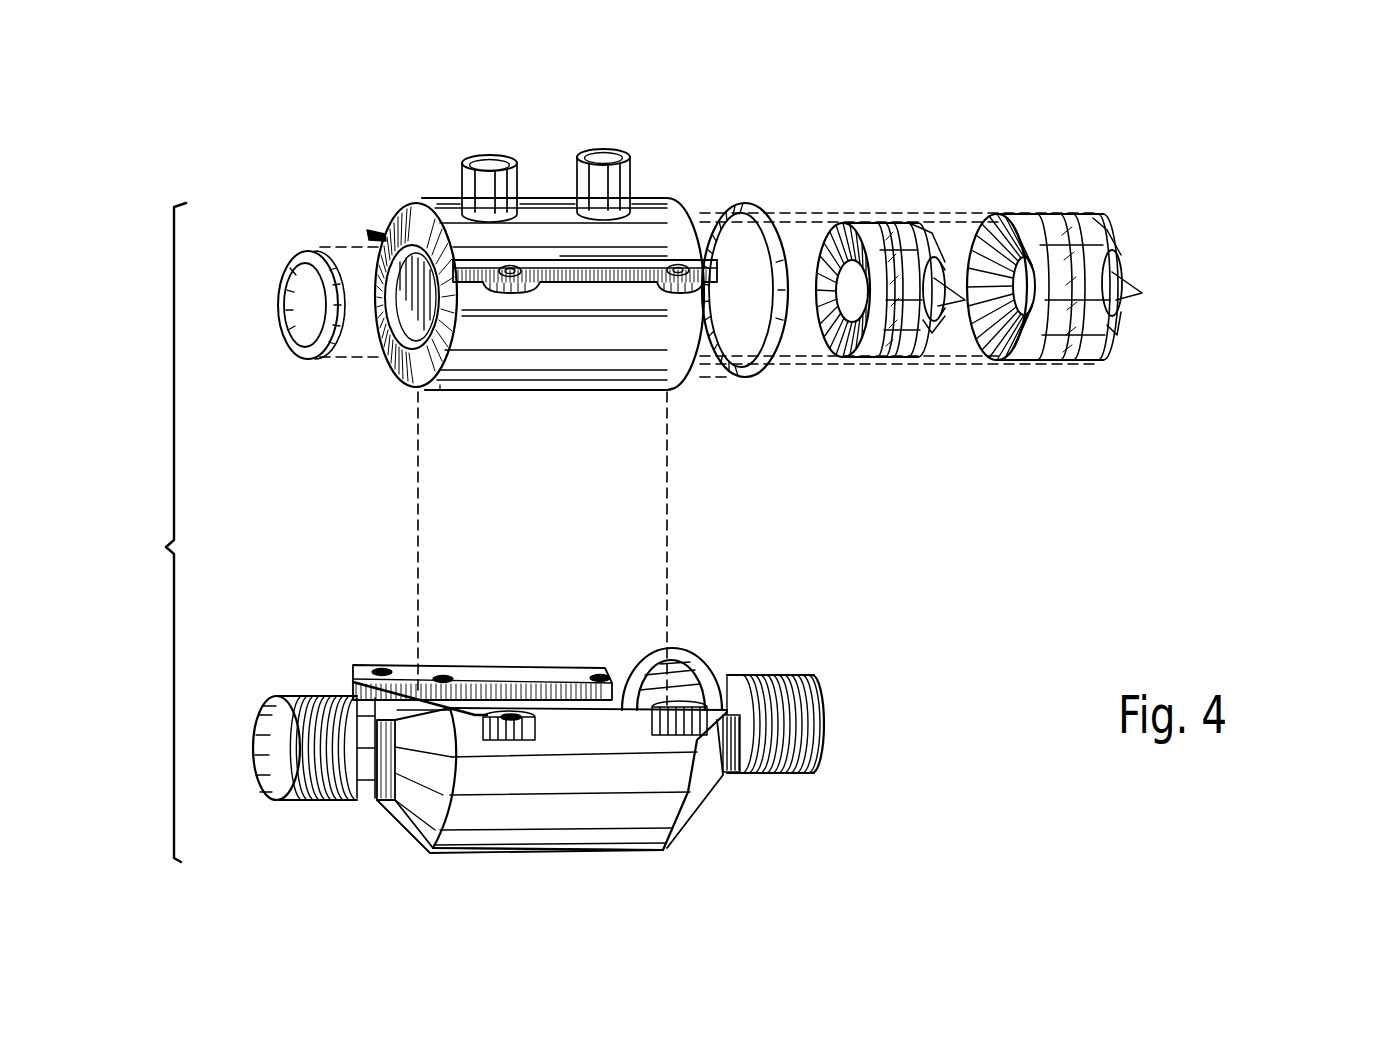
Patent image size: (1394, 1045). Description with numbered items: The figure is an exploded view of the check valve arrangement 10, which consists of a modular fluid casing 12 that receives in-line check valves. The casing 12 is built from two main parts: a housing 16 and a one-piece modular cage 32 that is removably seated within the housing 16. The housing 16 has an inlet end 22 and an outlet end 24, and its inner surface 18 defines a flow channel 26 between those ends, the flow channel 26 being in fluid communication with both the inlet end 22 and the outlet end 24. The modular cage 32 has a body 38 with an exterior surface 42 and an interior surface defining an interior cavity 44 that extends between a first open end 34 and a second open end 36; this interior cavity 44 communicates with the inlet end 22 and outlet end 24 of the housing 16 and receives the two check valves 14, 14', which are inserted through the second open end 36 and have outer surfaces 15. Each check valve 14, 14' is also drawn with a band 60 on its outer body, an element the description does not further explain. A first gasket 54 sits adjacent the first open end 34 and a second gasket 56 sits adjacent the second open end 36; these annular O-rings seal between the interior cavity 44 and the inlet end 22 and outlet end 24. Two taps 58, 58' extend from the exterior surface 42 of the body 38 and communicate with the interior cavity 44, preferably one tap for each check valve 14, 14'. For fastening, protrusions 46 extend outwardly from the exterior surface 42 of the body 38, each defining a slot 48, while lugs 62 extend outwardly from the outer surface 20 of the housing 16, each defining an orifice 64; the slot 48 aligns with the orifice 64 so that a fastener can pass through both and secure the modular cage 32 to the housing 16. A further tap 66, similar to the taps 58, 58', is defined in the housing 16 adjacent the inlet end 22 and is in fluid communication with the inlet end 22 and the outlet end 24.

The check valve arrangement 10 is at (771, 480).
The modular fluid casing 12 is at (603, 374).
The in-line check valve 14 is at (874, 254).
The second in-line check valve 14' is at (1042, 254).
The outer surface of check valve 15 is at (1024, 244).
The housing 16 is at (529, 785).
The inner surface of housing 18 is at (420, 670).
The outer surface of housing 20 is at (548, 874).
The inlet end 22 is at (296, 772).
The outlet end 24 is at (790, 752).
The flow channel 26 is at (482, 627).
The modular cage 32 is at (535, 273).
The first open end 34 is at (402, 327).
The second open end 36 is at (707, 414).
The body of modular cage 38 is at (552, 155).
The exterior surface of cage body 42 is at (457, 420).
The interior cavity 44 is at (369, 328).
The protrusions 46 is at (585, 351).
The slot 48 is at (625, 201).
The first gasket 54 is at (275, 305).
The second gasket 56 is at (748, 264).
The tap 58 is at (468, 167).
The second tap 58' is at (632, 163).
The rotor band 60 is at (1000, 315).
The lugs 62 is at (540, 657).
The orifice 64 is at (615, 669).
The tap 66 is at (354, 643).